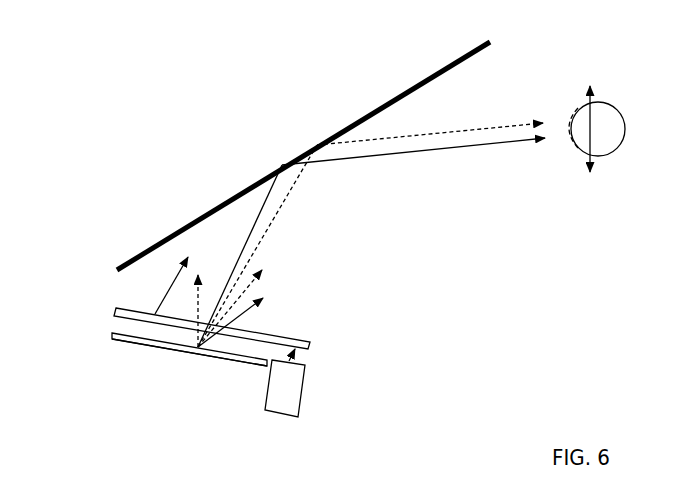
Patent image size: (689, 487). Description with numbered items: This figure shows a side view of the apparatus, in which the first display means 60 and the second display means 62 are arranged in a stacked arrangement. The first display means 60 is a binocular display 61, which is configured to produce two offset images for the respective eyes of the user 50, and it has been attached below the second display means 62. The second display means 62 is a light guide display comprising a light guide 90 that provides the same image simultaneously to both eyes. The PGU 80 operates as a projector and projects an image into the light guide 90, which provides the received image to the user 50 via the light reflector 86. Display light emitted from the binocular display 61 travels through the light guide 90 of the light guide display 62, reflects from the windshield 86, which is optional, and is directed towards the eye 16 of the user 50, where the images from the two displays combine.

The windshield 86 is at (268, 165).
The eye 16 is at (597, 129).
The user 50 is at (640, 165).
The second display means 62 is at (118, 305).
The first display means 60 is at (112, 335).
The binocular display 61 is at (112, 340).
The PGU 80 is at (265, 409).
The light guide 90 is at (310, 335).